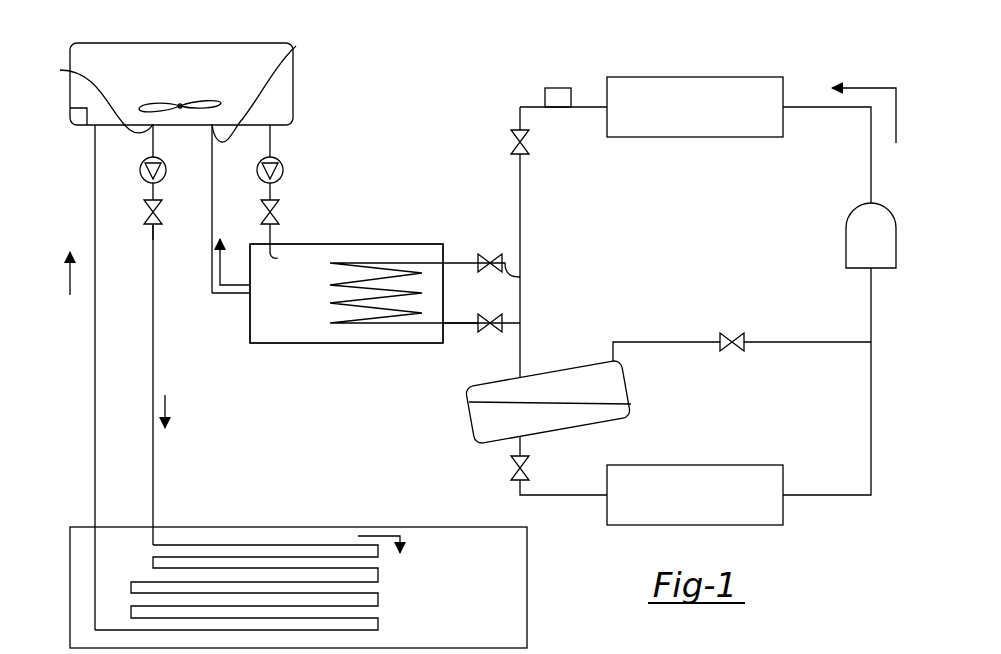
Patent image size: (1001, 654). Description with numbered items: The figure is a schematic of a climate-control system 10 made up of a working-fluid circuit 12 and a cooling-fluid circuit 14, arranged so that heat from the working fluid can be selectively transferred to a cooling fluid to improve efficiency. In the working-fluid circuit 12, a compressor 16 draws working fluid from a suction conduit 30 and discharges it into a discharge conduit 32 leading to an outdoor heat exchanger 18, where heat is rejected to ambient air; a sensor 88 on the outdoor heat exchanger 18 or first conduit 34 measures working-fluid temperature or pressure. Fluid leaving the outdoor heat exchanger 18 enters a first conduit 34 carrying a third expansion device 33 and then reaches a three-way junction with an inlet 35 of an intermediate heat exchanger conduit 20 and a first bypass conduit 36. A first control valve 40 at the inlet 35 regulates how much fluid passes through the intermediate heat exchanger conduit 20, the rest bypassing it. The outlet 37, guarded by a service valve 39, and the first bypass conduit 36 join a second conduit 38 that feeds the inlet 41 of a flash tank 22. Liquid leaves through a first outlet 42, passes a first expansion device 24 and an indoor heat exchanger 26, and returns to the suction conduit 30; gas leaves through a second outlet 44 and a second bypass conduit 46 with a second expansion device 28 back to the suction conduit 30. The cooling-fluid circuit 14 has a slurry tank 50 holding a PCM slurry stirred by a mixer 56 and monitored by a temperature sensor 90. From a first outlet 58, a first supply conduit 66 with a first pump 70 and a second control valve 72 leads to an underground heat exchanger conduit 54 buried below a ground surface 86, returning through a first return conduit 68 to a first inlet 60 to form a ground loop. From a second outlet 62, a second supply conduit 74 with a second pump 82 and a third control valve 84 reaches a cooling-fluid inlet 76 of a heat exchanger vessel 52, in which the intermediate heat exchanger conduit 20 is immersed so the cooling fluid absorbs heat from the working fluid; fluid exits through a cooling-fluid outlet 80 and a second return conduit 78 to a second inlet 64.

The climate-control system 10 is at (415, 85).
The working-fluid circuit 12 is at (530, 90).
The cooling-fluid circuit 14 is at (305, 120).
The compressor 16 is at (846, 240).
The outdoor heat exchanger 18 is at (735, 77).
The intermediate heat exchanger conduit 20 is at (340, 344).
The flash tank 22 is at (465, 432).
The first expansion device 24 is at (508, 468).
The indoor heat exchanger 26 is at (755, 465).
The second expansion device 28 is at (732, 332).
The suction conduit 30 is at (871, 305).
The discharge conduit 32 is at (871, 173).
The third expansion device 33 is at (512, 142).
The first conduit 34 is at (520, 175).
The inlet 35 is at (520, 277).
The first bypass conduit 36 is at (520, 297).
The outlet 37 is at (480, 314).
The second conduit 38 is at (520, 355).
The service valve 39 is at (490, 335).
The first control valve 40 is at (490, 253).
The inlet 41 is at (520, 376).
The first outlet 42 is at (522, 445).
The second outlet 44 is at (613, 355).
The second bypass conduit 46 is at (815, 343).
The slurry tank 50 is at (195, 54).
The heat exchanger vessel 52 is at (266, 344).
The underground heat exchanger conduit 54 is at (380, 601).
The mixer 56 is at (160, 105).
The first outlet 58 is at (61, 71).
The first inlet 60 is at (95, 125).
The second outlet 62 is at (270, 125).
The second inlet 64 is at (296, 47).
The first supply conduit 66 is at (153, 305).
The first return conduit 68 is at (95, 390).
The first pump 70 is at (140, 172).
The second control valve 72 is at (143, 212).
The second supply conduit 74 is at (260, 146).
The cooling-fluid inlet 76 is at (278, 258).
The second return conduit 78 is at (212, 230).
The cooling-fluid outlet 80 is at (250, 293).
The second pump 82 is at (283, 170).
The third control valve 84 is at (280, 212).
The ground surface 86 is at (328, 527).
The sensor 88 is at (560, 88).
The temperature sensor 90 is at (74, 113).